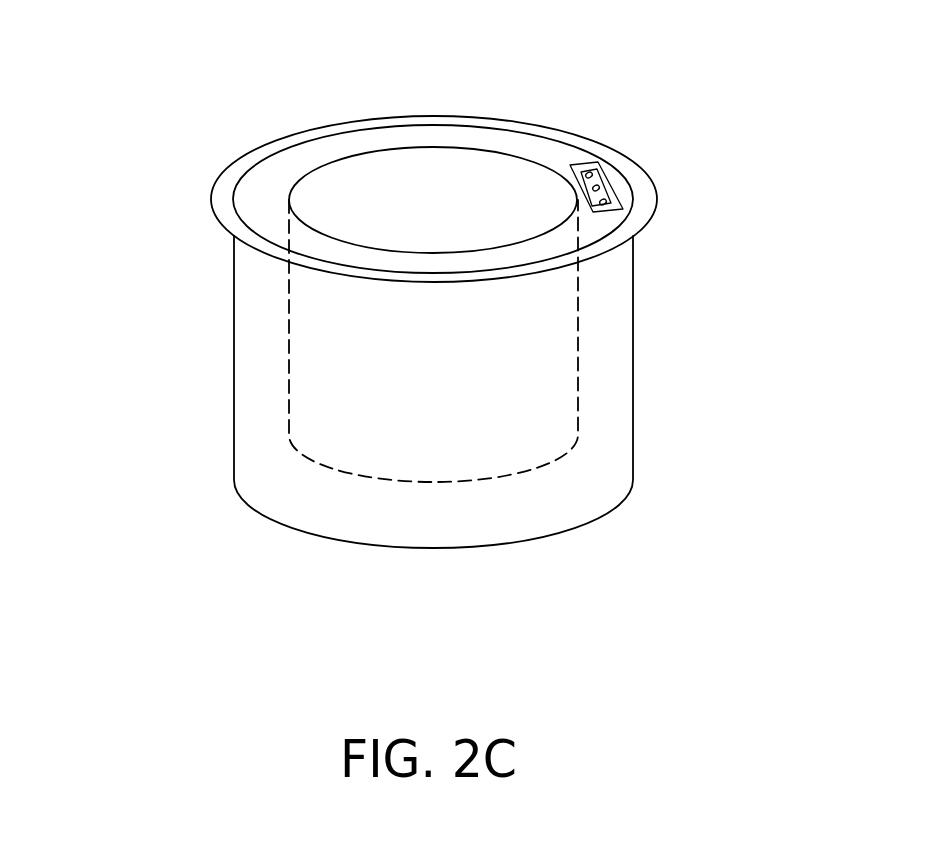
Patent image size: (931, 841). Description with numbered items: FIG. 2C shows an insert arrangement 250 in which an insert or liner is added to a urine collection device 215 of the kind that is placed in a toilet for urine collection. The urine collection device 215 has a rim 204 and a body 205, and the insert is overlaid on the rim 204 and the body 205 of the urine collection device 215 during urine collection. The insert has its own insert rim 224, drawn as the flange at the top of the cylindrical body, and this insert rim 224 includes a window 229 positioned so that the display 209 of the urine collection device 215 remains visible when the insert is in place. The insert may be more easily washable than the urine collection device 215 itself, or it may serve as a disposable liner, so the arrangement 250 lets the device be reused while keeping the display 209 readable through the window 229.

The insert arrangement 250 is at (194, 66).
The rim 204 is at (213, 196).
The body 205 is at (234, 345).
The insert rim 224 is at (539, 148).
The display 209 is at (591, 176).
The window 229 is at (638, 225).
The urine collection device 215 is at (650, 493).